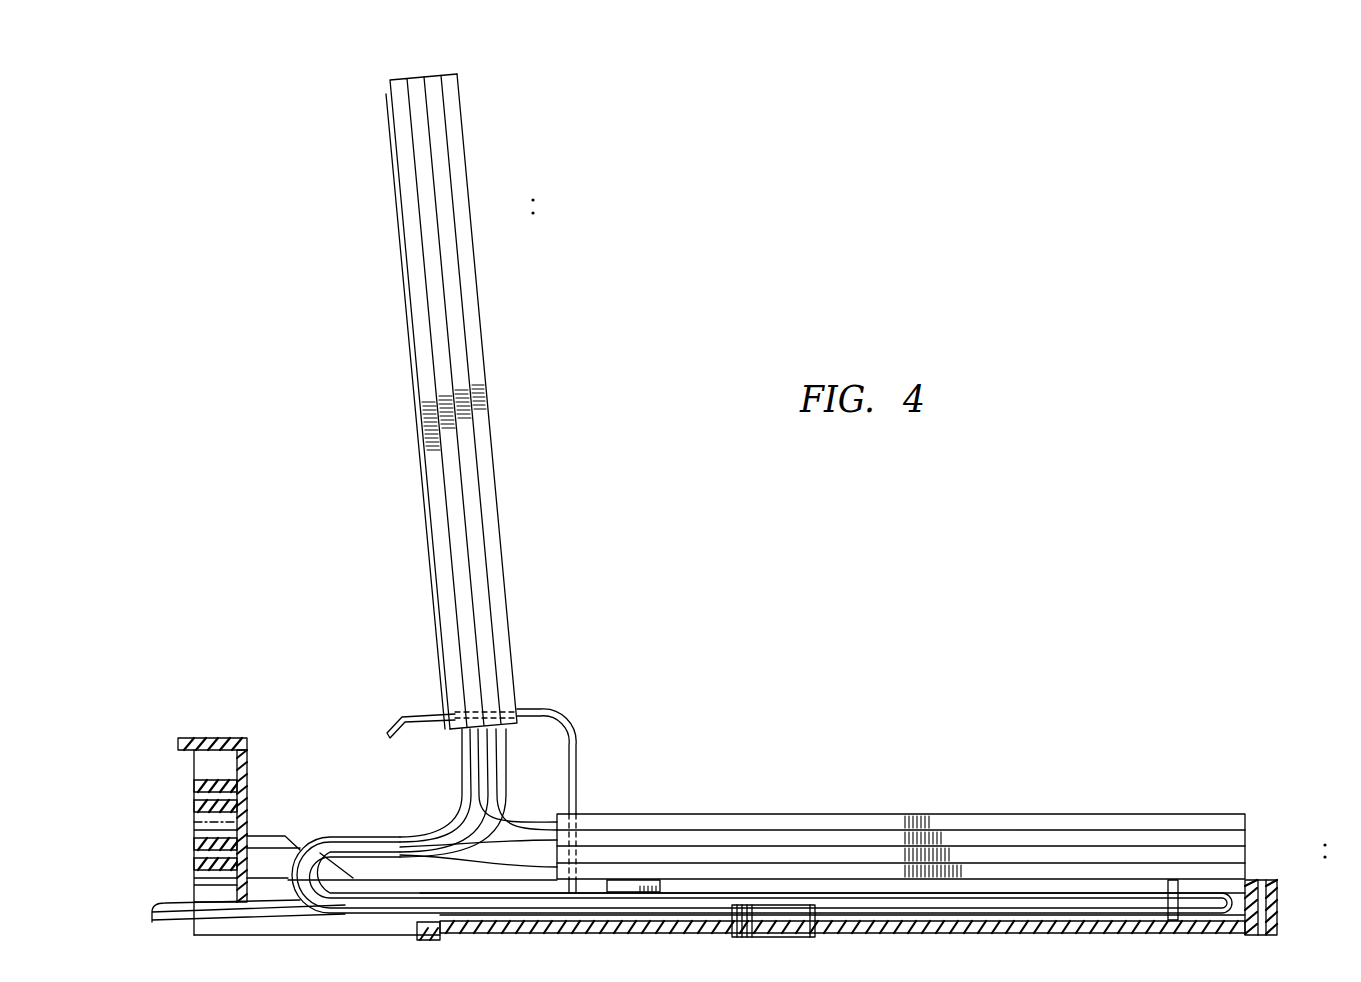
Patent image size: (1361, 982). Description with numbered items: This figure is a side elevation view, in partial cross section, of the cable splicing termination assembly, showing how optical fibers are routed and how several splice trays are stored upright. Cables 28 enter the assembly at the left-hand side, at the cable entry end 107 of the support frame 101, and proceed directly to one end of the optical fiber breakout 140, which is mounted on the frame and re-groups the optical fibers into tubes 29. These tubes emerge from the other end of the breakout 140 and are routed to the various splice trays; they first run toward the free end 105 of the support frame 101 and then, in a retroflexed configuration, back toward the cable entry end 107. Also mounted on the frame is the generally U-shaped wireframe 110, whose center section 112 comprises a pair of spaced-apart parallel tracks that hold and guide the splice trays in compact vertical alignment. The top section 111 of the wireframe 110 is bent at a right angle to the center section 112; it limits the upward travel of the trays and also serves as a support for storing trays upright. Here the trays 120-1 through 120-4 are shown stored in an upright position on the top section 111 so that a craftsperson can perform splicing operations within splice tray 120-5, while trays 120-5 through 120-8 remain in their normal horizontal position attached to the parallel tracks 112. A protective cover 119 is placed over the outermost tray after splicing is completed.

The cable 28 is at (162, 902).
The tube 29 is at (505, 815).
The support frame 101 is at (1006, 925).
The free end 105 is at (1277, 910).
The cable entry end 107 is at (193, 823).
The wireframe 110 is at (408, 705).
The top section 111 is at (520, 710).
The center section 112 is at (578, 783).
The protective cover 119 is at (410, 312).
The splice tray 120-1 is at (412, 186).
The splice tray 120-4 is at (462, 243).
The splice tray 120-5 is at (1245, 823).
The splice tray 120-8 is at (1245, 870).
The optical fiber breakout 140 is at (712, 905).